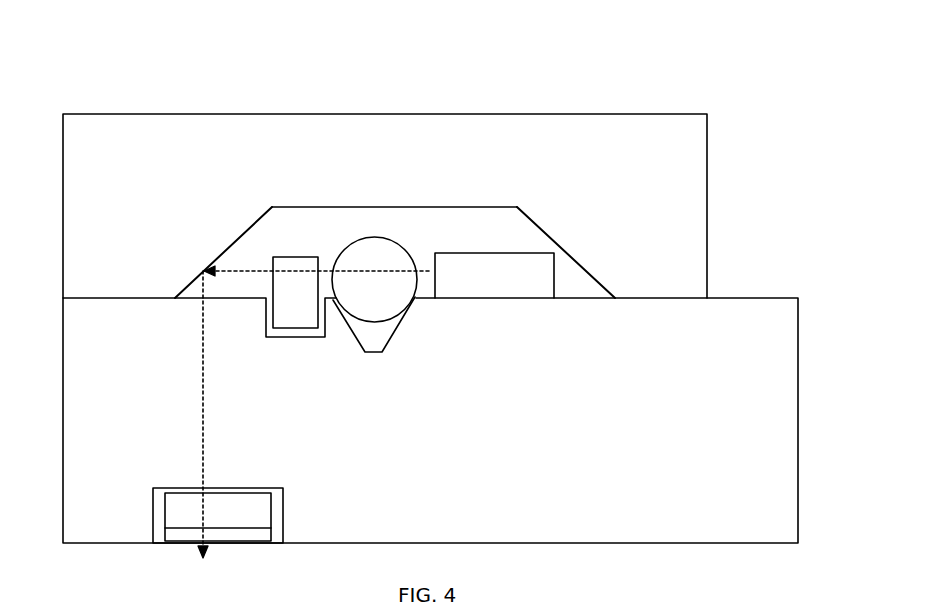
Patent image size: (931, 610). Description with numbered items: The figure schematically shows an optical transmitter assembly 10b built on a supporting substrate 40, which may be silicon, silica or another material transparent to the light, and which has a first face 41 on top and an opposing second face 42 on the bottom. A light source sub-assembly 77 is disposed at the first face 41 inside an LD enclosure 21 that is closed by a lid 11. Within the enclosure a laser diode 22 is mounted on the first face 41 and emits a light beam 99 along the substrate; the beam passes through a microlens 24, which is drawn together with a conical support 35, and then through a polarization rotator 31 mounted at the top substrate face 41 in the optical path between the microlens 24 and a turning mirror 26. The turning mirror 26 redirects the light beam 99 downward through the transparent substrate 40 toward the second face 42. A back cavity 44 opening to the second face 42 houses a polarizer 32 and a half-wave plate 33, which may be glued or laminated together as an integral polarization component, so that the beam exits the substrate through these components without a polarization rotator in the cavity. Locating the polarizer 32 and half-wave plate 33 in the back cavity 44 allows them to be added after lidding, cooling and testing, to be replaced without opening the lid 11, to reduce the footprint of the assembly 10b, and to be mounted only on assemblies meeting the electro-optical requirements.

The optical transmitter assembly 10b is at (277, 82).
The lid 11 is at (106, 157).
The supporting substrate 40 is at (108, 341).
The second face 42 is at (643, 541).
The light source sub-assembly 77 is at (425, 254).
The turning mirror 26 is at (236, 235).
The LD enclosure 21 is at (459, 207).
The first face 41 is at (576, 303).
The laser diode 22 is at (506, 286).
The polarization rotator 31 is at (308, 257).
The microlens 24 is at (373, 237).
The conical holder 35 is at (392, 327).
The light beam 99 is at (417, 273).
The back cavity 44 is at (283, 497).
The polarizer 32 is at (165, 503).
The half-wave plate 33 is at (165, 535).